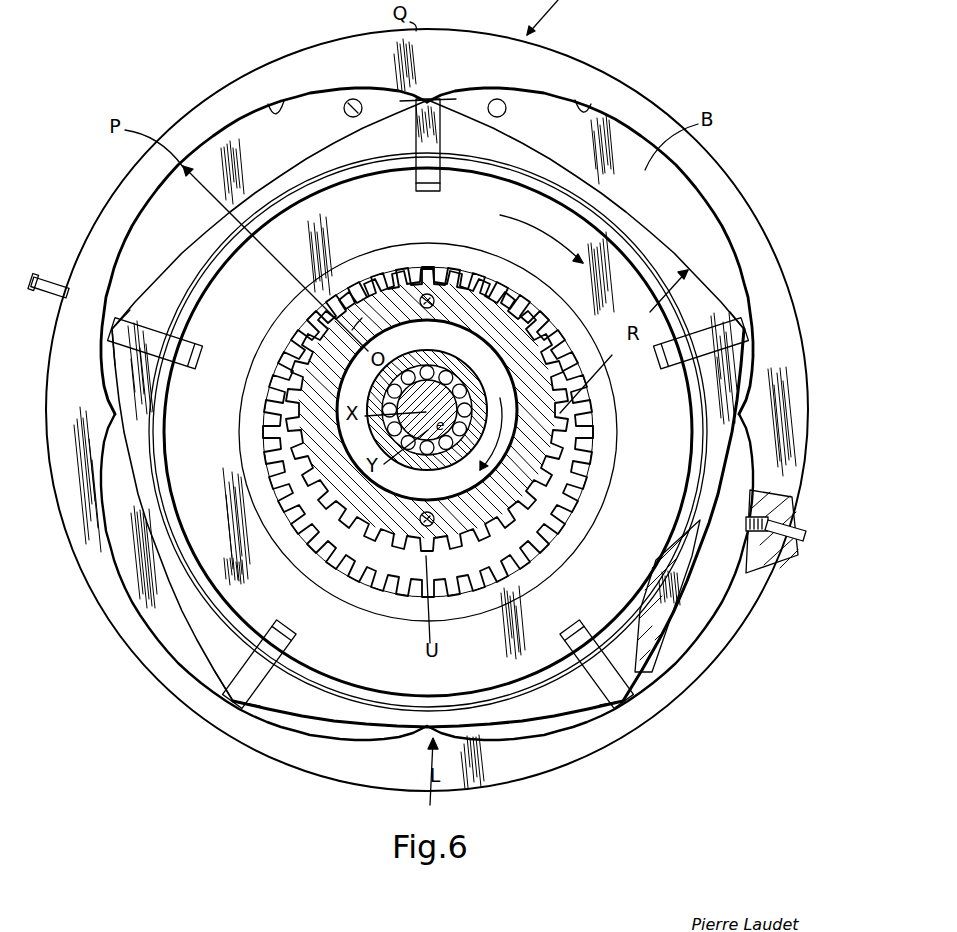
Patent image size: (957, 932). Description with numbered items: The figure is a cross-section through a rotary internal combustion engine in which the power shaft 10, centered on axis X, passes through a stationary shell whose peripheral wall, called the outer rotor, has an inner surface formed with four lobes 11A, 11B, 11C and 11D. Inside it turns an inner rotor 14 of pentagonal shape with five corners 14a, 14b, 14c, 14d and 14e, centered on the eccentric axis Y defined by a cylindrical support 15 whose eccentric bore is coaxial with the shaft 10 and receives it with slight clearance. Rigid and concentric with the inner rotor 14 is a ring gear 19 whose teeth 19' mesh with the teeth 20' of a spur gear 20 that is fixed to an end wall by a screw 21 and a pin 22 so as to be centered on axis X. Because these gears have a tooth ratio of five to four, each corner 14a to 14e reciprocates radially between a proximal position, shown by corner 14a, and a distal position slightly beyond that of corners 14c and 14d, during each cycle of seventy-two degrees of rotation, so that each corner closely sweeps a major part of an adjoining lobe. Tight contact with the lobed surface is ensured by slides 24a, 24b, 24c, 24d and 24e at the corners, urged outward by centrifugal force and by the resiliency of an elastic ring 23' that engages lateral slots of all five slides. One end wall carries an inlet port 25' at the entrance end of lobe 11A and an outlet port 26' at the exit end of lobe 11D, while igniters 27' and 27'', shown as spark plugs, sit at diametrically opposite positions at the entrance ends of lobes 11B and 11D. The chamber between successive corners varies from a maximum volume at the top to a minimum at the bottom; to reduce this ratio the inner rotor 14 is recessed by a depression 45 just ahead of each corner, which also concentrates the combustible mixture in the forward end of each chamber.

The power shaft 10 is at (426, 372).
The lobe 11A is at (585, 108).
The lobe 11B is at (715, 592).
The lobe 11C is at (328, 730).
The lobe 11D is at (275, 112).
The inner rotor 14 is at (190, 655).
The corner of inner rotor 14a is at (467, 104).
The corner of inner rotor 14b is at (718, 290).
The corner of inner rotor 14c is at (560, 730).
The corner of inner rotor 14d is at (274, 722).
The corner of inner rotor 14e is at (127, 320).
The cylindrical support 15 is at (476, 375).
The ring gear 19 is at (451, 432).
The teeth of ring gear 19' is at (618, 449).
The spur gear 20 is at (435, 432).
The teeth of spur gear 20' is at (450, 432).
The screw 21 is at (427, 293).
The pin 22 is at (395, 548).
The elastic ring 23' is at (428, 432).
The slide 24a is at (441, 127).
The slide 24b is at (742, 334).
The slide 24c is at (625, 700).
The slide 24d is at (228, 692).
The slide 24e is at (113, 343).
The inlet port 25' is at (504, 83).
The outlet port 26' is at (346, 85).
The igniter 27' is at (788, 544).
The igniter 27'' is at (49, 255).
The depression 45 is at (707, 645).